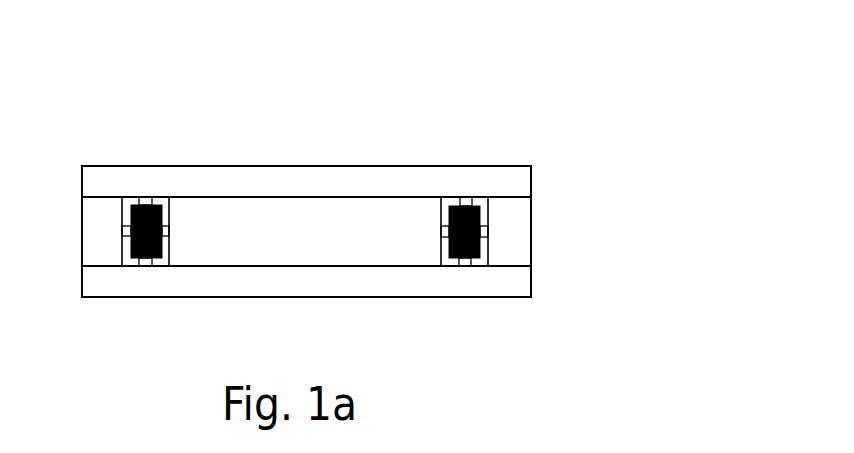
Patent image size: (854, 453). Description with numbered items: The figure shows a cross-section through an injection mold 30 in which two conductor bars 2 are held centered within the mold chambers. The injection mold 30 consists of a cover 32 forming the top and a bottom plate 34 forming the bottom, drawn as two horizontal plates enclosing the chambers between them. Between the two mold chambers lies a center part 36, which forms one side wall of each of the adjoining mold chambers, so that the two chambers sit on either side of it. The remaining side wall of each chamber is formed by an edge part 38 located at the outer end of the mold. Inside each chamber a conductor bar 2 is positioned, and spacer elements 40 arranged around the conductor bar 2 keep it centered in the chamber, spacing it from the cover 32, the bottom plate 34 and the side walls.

The injection mold 30 is at (513, 307).
The cover 32 is at (205, 183).
The bottom plate 34 is at (416, 286).
The center part 36 is at (313, 247).
The edge part 38 is at (511, 221).
The conductor bar 2 is at (474, 202).
The spacer element 40 is at (123, 238).